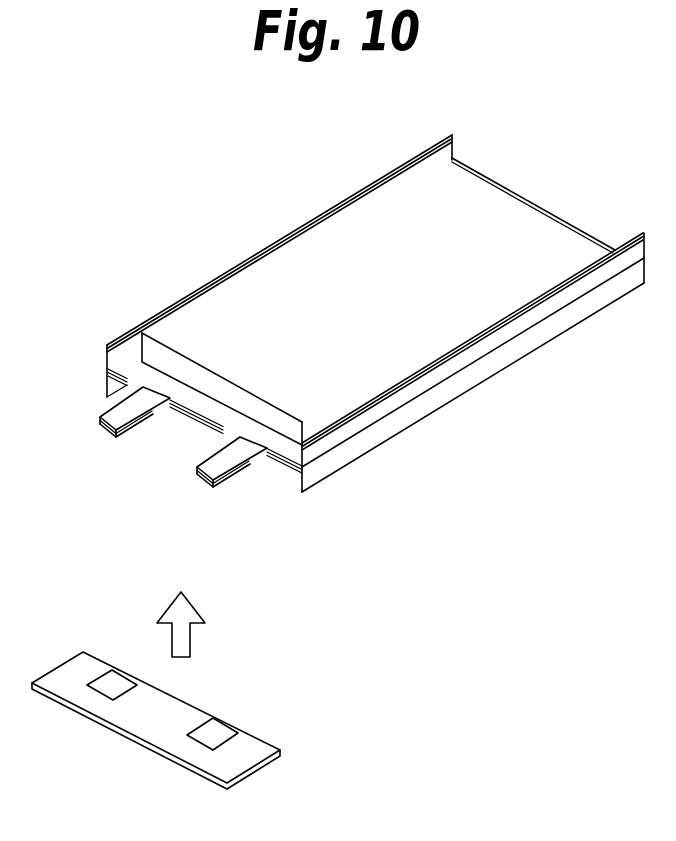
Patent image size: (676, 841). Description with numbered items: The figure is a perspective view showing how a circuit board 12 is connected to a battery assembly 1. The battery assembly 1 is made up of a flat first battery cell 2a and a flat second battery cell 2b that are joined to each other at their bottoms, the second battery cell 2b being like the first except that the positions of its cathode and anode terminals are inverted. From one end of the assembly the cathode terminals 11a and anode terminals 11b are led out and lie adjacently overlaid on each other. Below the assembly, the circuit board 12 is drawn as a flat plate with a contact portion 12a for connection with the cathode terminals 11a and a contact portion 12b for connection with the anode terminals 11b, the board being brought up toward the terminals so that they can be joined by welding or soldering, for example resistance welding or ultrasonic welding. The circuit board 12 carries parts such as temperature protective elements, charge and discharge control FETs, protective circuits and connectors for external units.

The battery assembly 1 is at (264, 190).
The first battery cell 2a is at (508, 218).
The second battery cell 2b is at (578, 316).
The cathode terminal 11a is at (213, 483).
The anode terminal 11b is at (118, 408).
The circuit board 12 is at (240, 762).
The contact portion 12a is at (218, 727).
The contact portion 12b is at (127, 677).